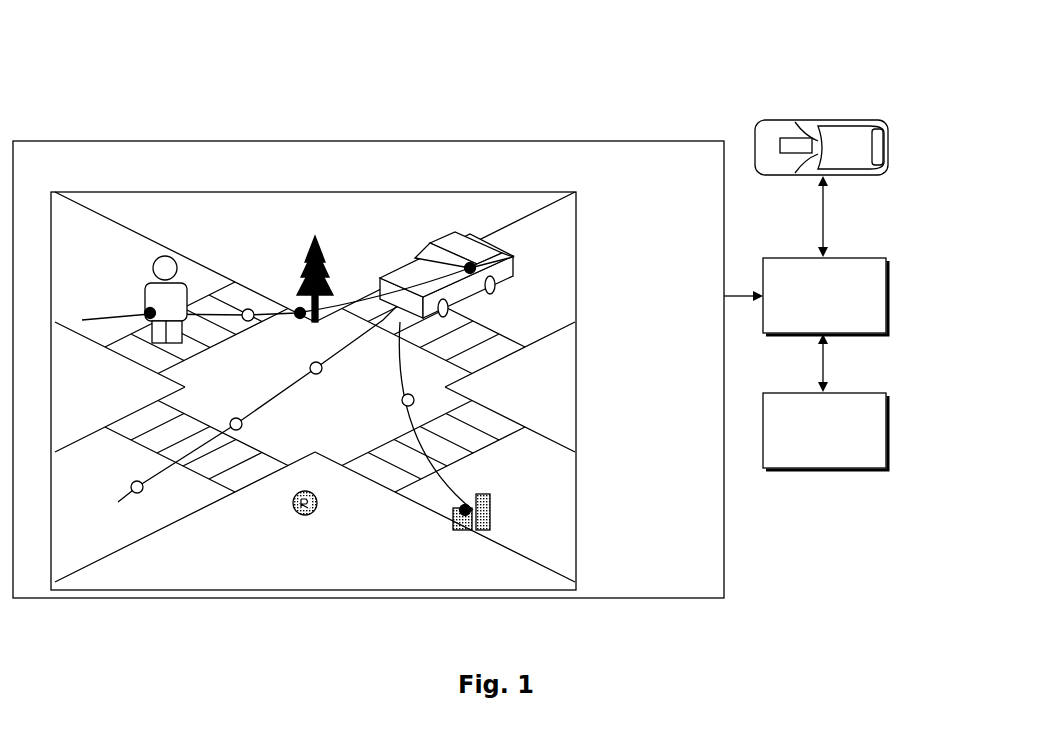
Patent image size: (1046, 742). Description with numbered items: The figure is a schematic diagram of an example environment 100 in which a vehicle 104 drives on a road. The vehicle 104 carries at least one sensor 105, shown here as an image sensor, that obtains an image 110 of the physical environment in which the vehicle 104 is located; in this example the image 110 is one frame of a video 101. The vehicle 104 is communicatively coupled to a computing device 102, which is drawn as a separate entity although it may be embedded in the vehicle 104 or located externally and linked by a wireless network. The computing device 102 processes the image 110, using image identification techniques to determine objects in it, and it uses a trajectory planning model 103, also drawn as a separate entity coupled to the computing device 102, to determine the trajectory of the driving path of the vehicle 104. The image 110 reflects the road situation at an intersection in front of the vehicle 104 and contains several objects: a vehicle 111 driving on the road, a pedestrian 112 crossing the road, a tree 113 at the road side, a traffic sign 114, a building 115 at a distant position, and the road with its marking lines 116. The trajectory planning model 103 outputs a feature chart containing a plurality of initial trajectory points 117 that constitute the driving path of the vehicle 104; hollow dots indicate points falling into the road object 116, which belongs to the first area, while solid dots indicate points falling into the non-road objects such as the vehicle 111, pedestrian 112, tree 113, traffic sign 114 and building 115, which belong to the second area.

The environment 100 is at (101, 78).
The video 101 is at (57, 141).
The computing device 102 is at (858, 258).
The trajectory planning model 103 is at (787, 472).
The vehicle 104 is at (836, 116).
The sensor 105 is at (780, 143).
The image 110 is at (340, 193).
The vehicle object 111 is at (381, 278).
The pedestrian object 112 is at (171, 258).
The tree object 113 is at (311, 232).
The traffic sign object 114 is at (328, 505).
The building object 115 is at (495, 520).
The road object 116 is at (228, 348).
The initial trajectory points 117 is at (220, 410).